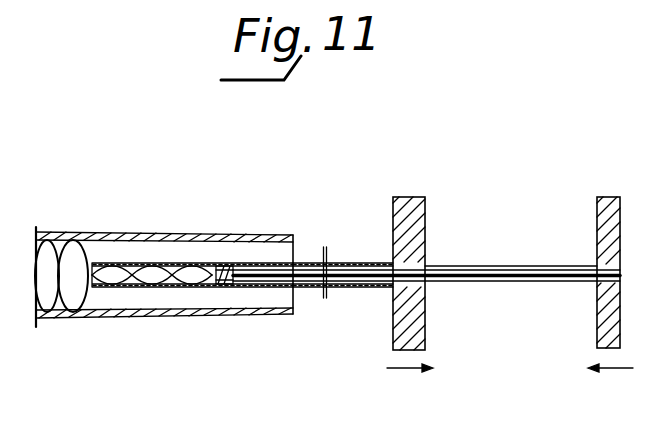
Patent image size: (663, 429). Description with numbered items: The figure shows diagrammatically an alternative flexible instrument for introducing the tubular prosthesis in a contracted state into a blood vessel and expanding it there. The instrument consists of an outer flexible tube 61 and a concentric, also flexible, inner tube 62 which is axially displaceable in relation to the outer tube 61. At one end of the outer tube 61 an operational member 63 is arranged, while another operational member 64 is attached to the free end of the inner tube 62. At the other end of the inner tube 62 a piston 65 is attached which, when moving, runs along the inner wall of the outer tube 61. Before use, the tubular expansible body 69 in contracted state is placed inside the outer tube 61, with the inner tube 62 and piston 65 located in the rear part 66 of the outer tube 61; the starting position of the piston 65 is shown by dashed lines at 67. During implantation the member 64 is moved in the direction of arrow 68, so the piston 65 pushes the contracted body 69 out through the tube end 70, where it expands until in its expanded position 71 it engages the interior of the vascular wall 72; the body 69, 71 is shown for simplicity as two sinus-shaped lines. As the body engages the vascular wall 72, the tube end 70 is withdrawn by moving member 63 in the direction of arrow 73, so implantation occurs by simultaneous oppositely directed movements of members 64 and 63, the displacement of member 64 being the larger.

The outer flexible tube 61 is at (190, 289).
The inner tube 62 is at (328, 284).
The operational member 63 is at (420, 320).
The operational member 64 is at (608, 302).
The piston 65 is at (223, 287).
The rear part 66 is at (260, 287).
The starting position of piston 67 is at (277, 292).
The arrow 68 is at (610, 382).
The tubular expansible body 69 is at (128, 290).
The tube end 70 is at (88, 303).
The expanded position 71 is at (62, 303).
The vascular wall 72 is at (153, 316).
The arrow 73 is at (410, 382).